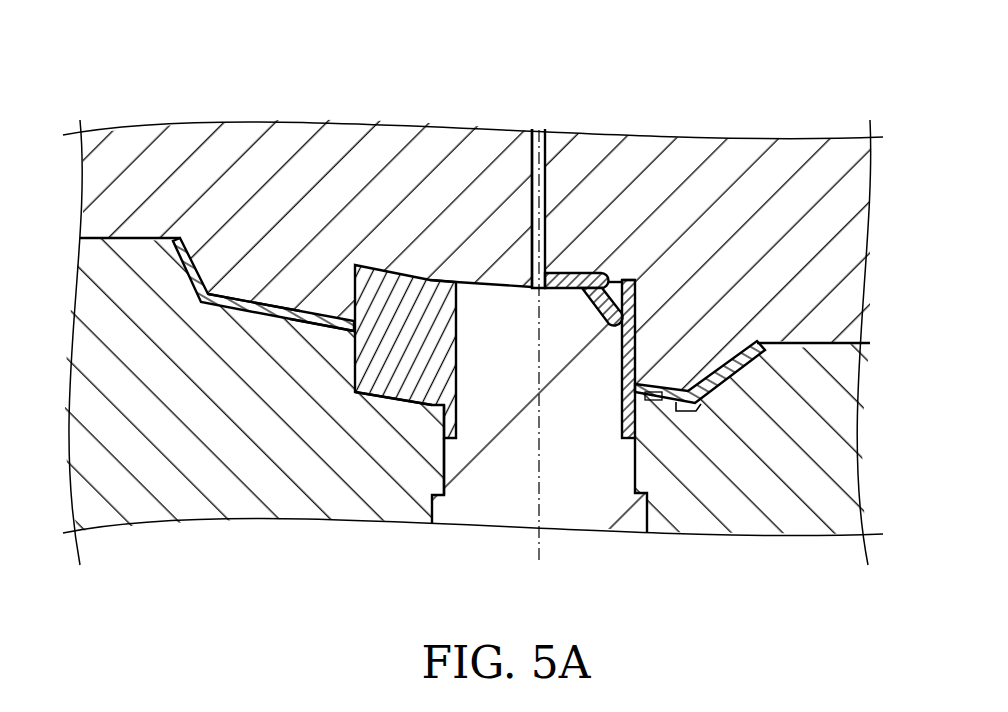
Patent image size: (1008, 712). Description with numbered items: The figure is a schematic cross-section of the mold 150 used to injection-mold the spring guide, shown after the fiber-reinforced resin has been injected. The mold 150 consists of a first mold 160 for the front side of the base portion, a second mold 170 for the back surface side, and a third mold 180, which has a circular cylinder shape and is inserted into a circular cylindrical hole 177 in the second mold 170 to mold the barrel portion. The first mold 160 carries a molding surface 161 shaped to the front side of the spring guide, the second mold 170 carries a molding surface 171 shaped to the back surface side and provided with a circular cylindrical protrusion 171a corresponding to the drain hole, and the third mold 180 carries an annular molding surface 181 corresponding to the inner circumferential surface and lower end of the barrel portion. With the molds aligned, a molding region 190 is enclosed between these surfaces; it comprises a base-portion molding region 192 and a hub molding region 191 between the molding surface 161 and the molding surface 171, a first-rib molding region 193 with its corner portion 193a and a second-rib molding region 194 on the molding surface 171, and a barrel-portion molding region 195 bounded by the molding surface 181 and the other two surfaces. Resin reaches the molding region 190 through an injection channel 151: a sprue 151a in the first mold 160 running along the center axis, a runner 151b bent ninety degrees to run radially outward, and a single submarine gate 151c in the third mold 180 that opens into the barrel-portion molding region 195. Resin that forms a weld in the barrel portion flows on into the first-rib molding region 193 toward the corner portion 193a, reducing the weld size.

The mold 150 is at (113, 107).
The injection channel 151 is at (549, 272).
The sprue 151a is at (532, 163).
The runner 151b is at (568, 262).
The submarine gate 151c is at (598, 326).
The first mold 160 is at (817, 165).
The molding surface 161 is at (330, 320).
The second mold 170 is at (120, 492).
The molding surface 171 is at (338, 292).
The protrusion 171a is at (667, 402).
The hole 177 is at (455, 468).
The third mold 180 is at (515, 493).
The molding surface 181 is at (631, 440).
The molding region 190 is at (640, 257).
The hub molding region 191 is at (436, 268).
The base-portion molding region 192 is at (288, 298).
The first-rib molding region 193 is at (404, 318).
The corner portion 193a is at (360, 396).
The second-rib molding region 194 is at (687, 415).
The barrel-portion molding region 195 is at (620, 277).